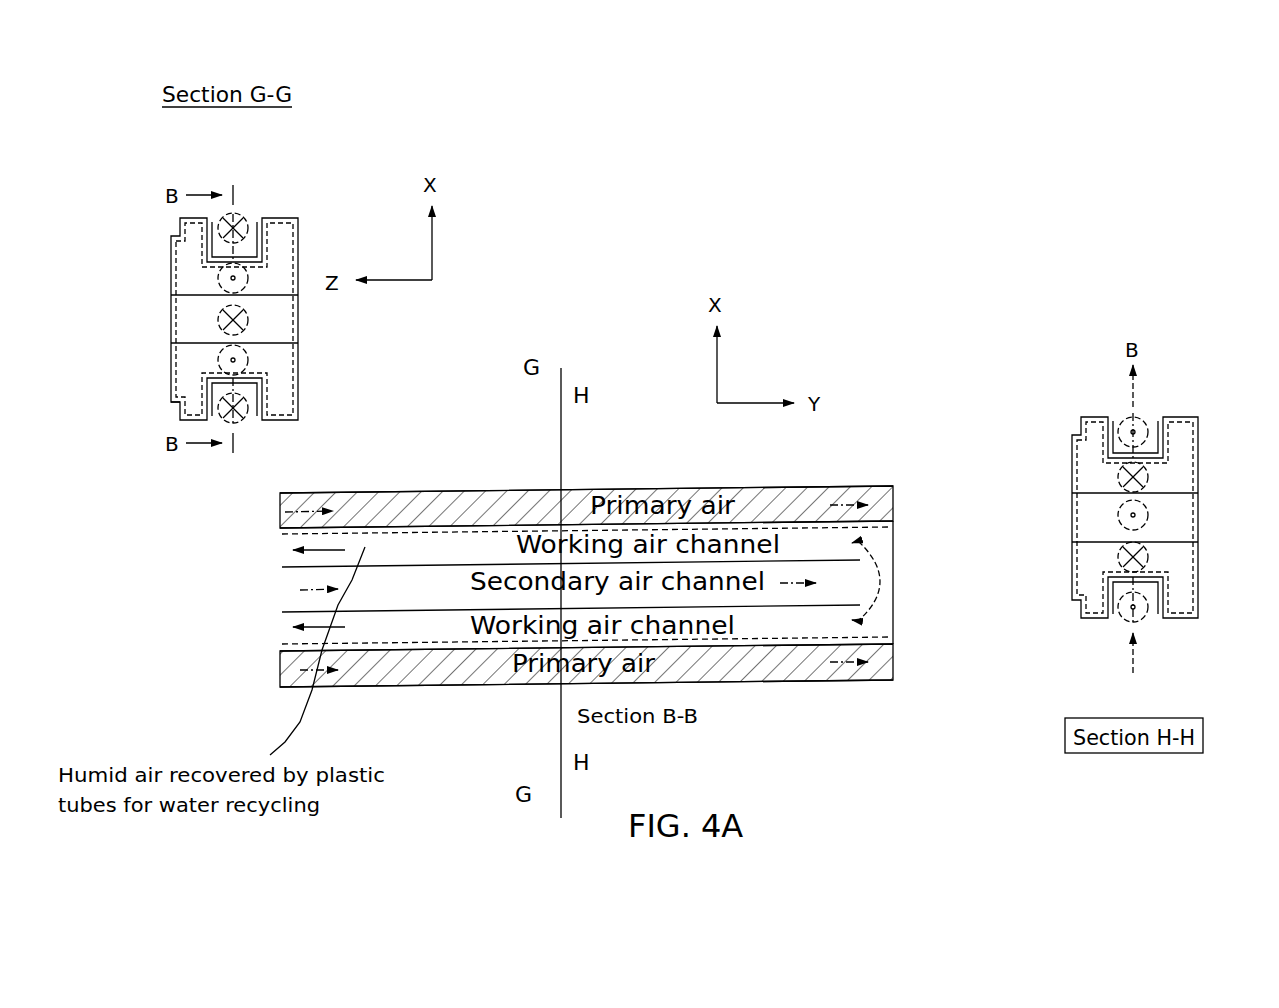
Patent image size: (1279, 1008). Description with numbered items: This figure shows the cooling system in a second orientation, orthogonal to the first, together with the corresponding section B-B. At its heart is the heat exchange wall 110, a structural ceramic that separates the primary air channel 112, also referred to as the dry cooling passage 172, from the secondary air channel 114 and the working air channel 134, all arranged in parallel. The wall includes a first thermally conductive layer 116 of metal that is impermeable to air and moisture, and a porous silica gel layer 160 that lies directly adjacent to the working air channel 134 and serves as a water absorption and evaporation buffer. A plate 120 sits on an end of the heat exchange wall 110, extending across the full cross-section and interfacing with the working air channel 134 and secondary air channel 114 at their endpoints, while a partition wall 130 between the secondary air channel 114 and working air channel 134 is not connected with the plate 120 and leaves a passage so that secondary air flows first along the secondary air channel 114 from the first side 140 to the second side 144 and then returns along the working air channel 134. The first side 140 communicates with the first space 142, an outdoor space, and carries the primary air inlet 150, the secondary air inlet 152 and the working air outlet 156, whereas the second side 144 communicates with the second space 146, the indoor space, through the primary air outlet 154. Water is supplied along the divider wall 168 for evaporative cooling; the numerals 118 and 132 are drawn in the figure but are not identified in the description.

The heat exchange wall 110 is at (171, 262).
The primary air channel 112 is at (505, 492).
The secondary air channel 114 is at (1147, 513).
The first thermally conductive layer 116 is at (285, 418).
The notch 118 is at (177, 412).
The plate 120 is at (893, 581).
The partition wall 130 is at (418, 563).
The secondary air channel 132 is at (410, 585).
The working air channel 134 is at (683, 628).
The first side 140 is at (178, 372).
The first space 142 is at (182, 584).
The second side 144 is at (1182, 587).
The second space 146 is at (957, 606).
The primary air inlet 150 is at (287, 507).
The secondary air inlet 152 is at (283, 585).
The primary air outlet 154 is at (1147, 473).
The working air outlet 156 is at (1137, 478).
The porous silica gel layer 160 is at (583, 522).
The divider wall 168 is at (285, 218).
The dry cooling passage 172 is at (491, 668).